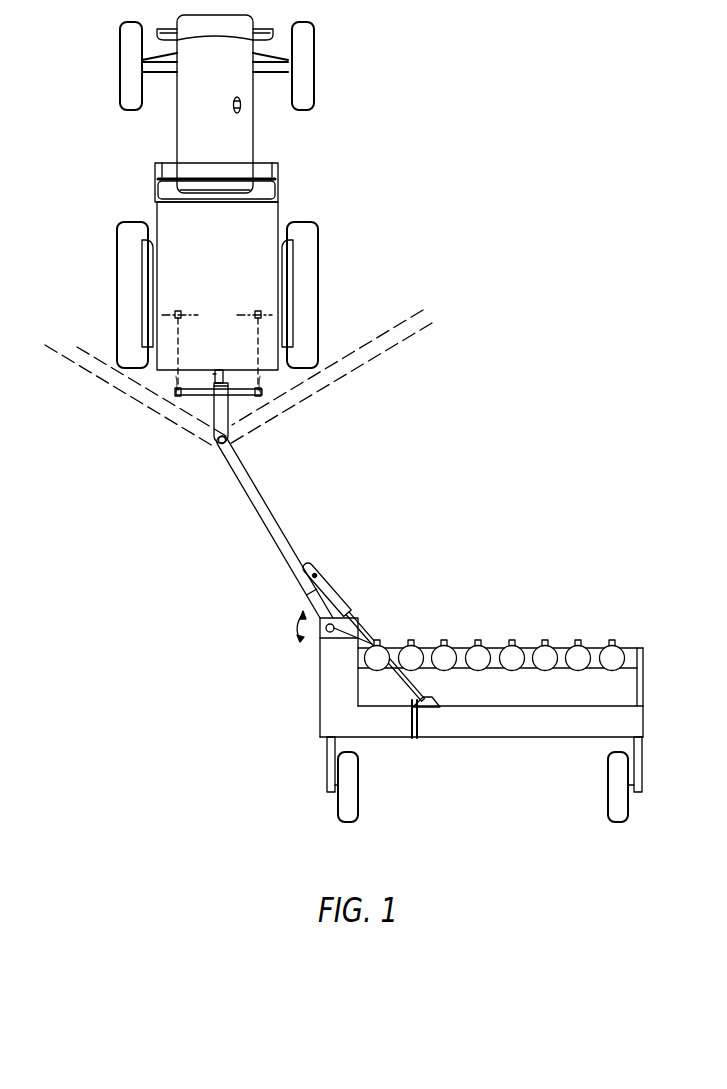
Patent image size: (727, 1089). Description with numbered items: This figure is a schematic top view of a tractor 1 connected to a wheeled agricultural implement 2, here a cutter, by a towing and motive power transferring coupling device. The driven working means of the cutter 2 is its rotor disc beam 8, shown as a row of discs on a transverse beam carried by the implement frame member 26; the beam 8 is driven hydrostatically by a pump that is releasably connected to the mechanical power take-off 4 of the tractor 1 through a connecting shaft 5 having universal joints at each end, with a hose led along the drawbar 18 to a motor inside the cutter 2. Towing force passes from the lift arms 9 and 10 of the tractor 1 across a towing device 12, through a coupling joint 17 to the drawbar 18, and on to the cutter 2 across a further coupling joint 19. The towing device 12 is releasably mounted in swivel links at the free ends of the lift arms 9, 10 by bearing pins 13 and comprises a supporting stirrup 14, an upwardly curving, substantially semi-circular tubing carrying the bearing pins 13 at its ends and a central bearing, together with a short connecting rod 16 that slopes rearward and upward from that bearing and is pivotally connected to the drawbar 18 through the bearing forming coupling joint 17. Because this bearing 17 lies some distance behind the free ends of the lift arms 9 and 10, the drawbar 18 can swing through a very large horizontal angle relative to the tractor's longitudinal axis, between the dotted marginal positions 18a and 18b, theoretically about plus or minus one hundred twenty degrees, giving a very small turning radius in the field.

The tractor 1 is at (251, 241).
The wheeled agricultural implement 2 is at (505, 776).
The mechanical power take-off 4 is at (220, 371).
The connecting shaft 5 is at (213, 374).
The rotor disc beam 8 is at (512, 655).
The lift arm 9 is at (174, 378).
The lift arm 10 is at (262, 382).
The towing device 12 is at (212, 423).
The bearing pins 13 is at (177, 398).
The supporting stirrup 14 is at (258, 414).
The connecting rod 16 is at (211, 445).
The coupling joint 17 is at (230, 443).
The drawbar 18 is at (288, 547).
The marginal position of the drawbar 18a is at (61, 334).
The marginal position of the drawbar 18b is at (410, 309).
The coupling joint 19 is at (345, 620).
The frame beam 26 is at (638, 720).